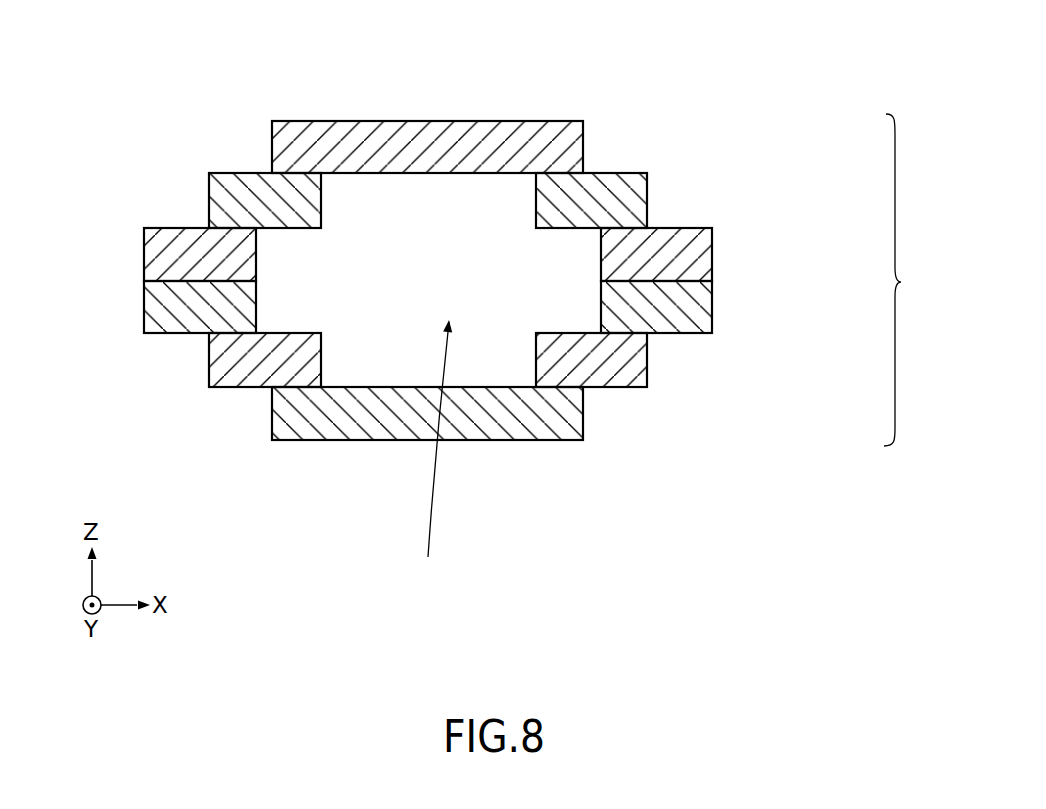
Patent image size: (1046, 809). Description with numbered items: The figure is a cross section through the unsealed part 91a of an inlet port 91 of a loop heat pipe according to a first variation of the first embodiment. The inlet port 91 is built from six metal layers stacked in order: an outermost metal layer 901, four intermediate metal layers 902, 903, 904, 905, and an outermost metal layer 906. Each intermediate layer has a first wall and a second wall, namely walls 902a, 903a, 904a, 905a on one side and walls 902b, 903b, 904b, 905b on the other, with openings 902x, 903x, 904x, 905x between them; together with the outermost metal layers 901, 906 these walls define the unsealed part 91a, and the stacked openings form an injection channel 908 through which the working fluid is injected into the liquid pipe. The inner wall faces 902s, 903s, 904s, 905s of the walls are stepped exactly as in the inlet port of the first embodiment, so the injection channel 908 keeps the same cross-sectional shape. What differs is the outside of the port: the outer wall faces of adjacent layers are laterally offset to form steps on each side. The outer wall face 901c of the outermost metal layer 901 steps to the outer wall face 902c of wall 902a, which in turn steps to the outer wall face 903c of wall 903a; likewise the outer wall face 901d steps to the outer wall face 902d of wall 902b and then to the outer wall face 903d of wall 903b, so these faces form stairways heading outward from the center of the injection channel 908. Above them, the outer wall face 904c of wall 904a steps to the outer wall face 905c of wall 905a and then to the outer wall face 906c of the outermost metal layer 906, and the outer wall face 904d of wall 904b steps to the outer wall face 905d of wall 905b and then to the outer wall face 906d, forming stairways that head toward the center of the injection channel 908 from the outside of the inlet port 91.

The inlet port 91 is at (590, 117).
The unsealed part 91a is at (918, 280).
The outermost metal layer 901 is at (587, 417).
The intermediate metal layer 902 is at (651, 348).
The intermediate metal layer 903 is at (716, 290).
The intermediate metal layer 904 is at (716, 250).
The intermediate metal layer 905 is at (650, 213).
The outermost metal layer 906 is at (587, 144).
The outer wall face 901c is at (272, 417).
The outer wall face 901d is at (585, 430).
The wall 902a is at (247, 387).
The wall 902b is at (610, 373).
The outer wall face 902c is at (209, 367).
The outer wall face 902d is at (648, 377).
The inner wall face 902s is at (322, 362).
The opening 902x is at (472, 360).
The wall 903a is at (185, 333).
The wall 903b is at (678, 303).
The outer wall face 903c is at (144, 305).
The outer wall face 903d is at (713, 312).
The inner wall face 903s is at (257, 305).
The opening 903x is at (398, 307).
The wall 904a is at (185, 228).
The wall 904b is at (690, 252).
The outer wall face 904c is at (144, 252).
The outer wall face 904d is at (713, 269).
The inner wall face 904s is at (257, 253).
The opening 904x is at (402, 257).
The wall 905a is at (247, 173).
The wall 905b is at (597, 192).
The outer wall face 905c is at (209, 200).
The outer wall face 905d is at (647, 188).
The inner wall face 905s is at (322, 200).
The opening 905x is at (468, 200).
The outer wall face 906c is at (272, 147).
The outer wall face 906d is at (586, 133).
The injection channel 908 is at (432, 455).